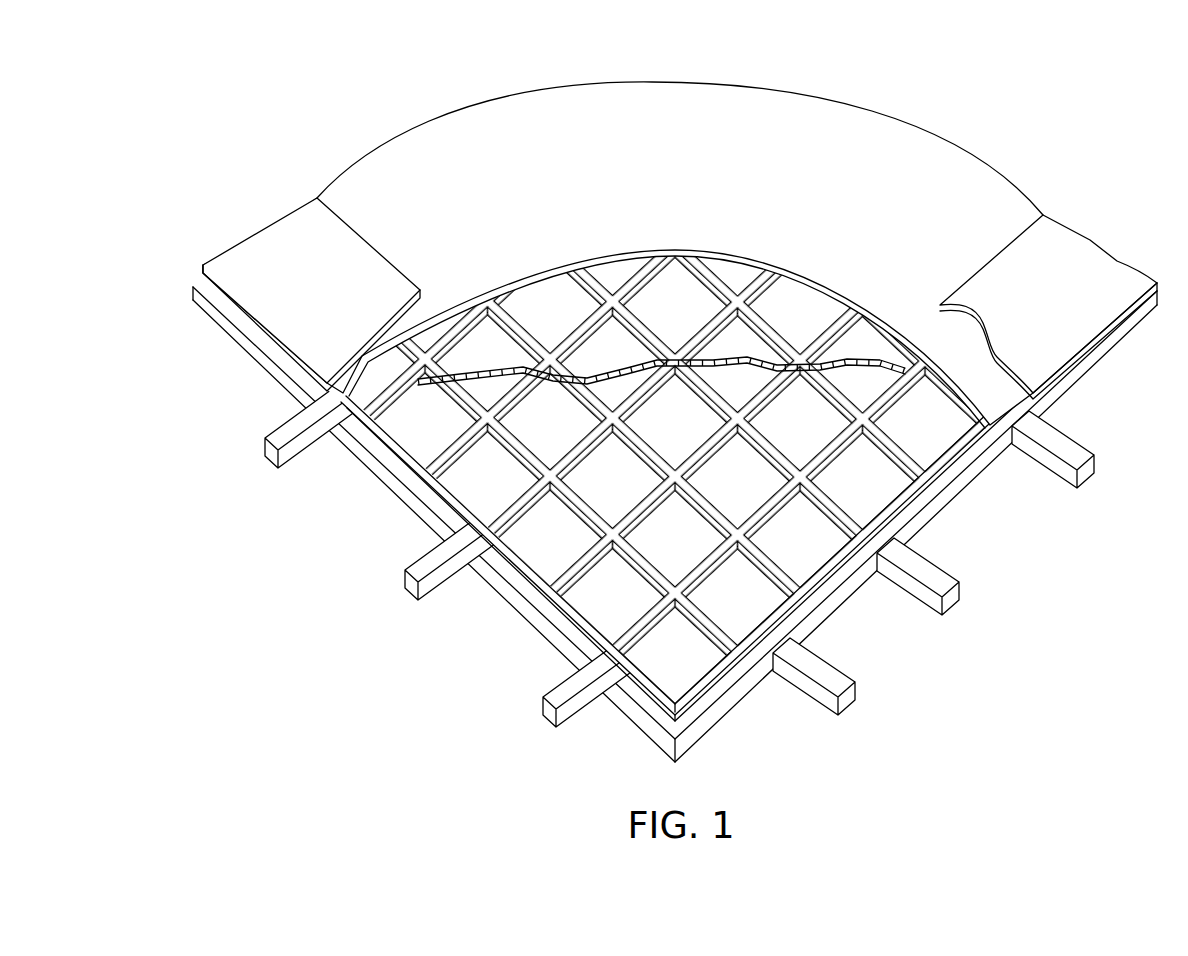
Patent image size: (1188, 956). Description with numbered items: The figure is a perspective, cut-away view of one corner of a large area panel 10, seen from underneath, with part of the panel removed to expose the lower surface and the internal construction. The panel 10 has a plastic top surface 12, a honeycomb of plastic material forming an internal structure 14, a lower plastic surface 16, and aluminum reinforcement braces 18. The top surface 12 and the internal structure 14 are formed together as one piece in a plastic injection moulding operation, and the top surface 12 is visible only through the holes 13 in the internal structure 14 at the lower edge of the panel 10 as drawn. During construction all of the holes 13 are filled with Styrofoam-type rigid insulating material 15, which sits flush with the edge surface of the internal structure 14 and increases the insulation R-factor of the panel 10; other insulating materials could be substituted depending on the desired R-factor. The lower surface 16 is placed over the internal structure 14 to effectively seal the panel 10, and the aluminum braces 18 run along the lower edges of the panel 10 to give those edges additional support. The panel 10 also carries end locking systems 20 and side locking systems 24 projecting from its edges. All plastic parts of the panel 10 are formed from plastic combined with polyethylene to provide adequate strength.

The large area panel 10 is at (174, 108).
The plastic top surface 12 is at (880, 484).
The holes 13 is at (665, 435).
The internal structure 14 is at (878, 421).
The rigid insulating material 15 is at (537, 312).
The lower plastic surface 16 is at (660, 172).
The aluminum reinforcement braces 18 is at (300, 300).
The end locking systems 20 is at (270, 453).
The side locking systems 24 is at (1094, 478).